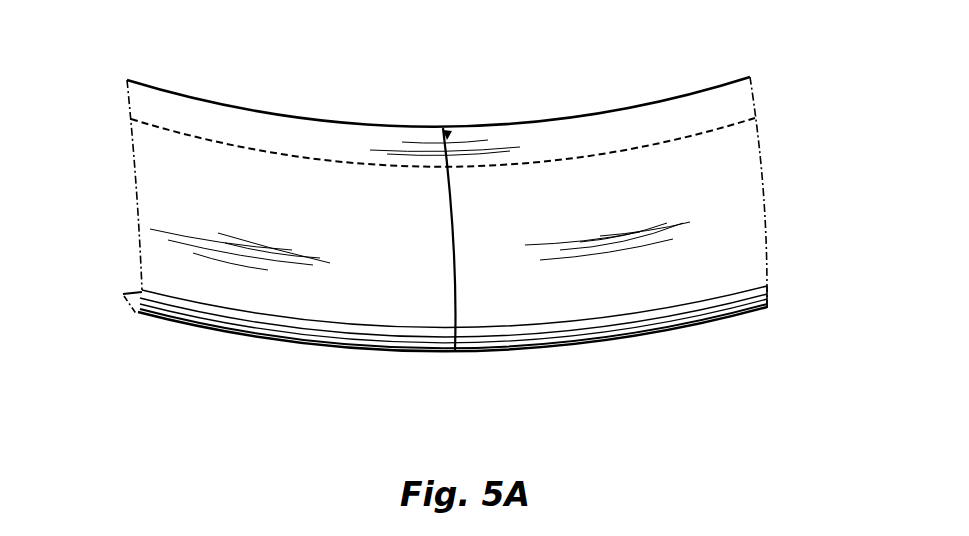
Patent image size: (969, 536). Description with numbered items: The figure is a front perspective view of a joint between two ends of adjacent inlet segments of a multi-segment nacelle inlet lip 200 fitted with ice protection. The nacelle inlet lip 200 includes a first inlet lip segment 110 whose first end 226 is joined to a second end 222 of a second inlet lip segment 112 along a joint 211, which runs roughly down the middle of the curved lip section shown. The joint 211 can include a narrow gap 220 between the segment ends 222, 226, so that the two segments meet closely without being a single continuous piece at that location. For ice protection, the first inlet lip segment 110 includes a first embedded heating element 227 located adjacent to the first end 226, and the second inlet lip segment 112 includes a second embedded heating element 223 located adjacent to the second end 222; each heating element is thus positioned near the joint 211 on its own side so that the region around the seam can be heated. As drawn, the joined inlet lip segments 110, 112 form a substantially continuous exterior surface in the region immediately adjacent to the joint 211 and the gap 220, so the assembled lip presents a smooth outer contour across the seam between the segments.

The nacelle inlet lip 200 is at (619, 66).
The narrow gap 220 is at (440, 128).
The joint 211 is at (450, 130).
The first embedded heating element 227 is at (165, 204).
The second embedded heating element 223 is at (722, 202).
The first end 226 is at (425, 350).
The second end 222 is at (485, 352).
The first inlet lip segment 110 is at (232, 333).
The second inlet lip segment 112 is at (690, 328).